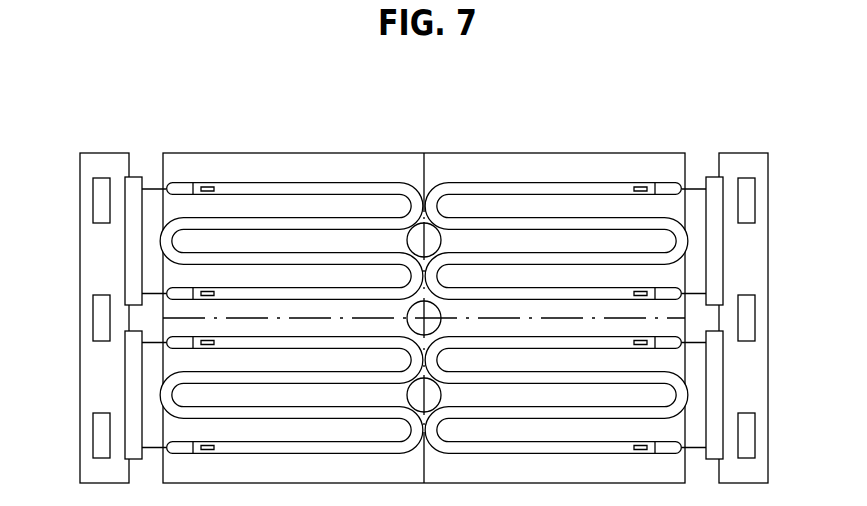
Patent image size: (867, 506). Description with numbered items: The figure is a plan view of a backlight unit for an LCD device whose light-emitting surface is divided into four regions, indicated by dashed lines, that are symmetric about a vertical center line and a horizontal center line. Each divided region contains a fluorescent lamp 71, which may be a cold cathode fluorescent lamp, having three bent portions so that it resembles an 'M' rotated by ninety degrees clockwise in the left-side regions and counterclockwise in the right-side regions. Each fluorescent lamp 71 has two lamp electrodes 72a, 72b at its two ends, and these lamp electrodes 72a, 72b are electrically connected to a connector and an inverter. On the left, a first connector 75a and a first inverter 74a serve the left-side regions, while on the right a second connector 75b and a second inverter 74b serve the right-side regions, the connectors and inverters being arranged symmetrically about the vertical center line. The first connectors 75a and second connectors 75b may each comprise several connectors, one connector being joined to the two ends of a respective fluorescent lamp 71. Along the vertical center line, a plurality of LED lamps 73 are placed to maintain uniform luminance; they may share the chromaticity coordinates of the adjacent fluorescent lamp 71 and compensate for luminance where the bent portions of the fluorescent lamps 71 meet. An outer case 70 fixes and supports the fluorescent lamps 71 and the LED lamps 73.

The outer case 70 is at (403, 152).
The fluorescent lamp 71 is at (350, 188).
The lamp electrode 72a is at (209, 186).
The lamp electrode 72b is at (207, 291).
The LED lamp 73 is at (432, 230).
The first inverter 74a is at (88, 287).
The second inverter 74b is at (758, 288).
The first connector 75a is at (131, 203).
The second connector 75b is at (716, 205).